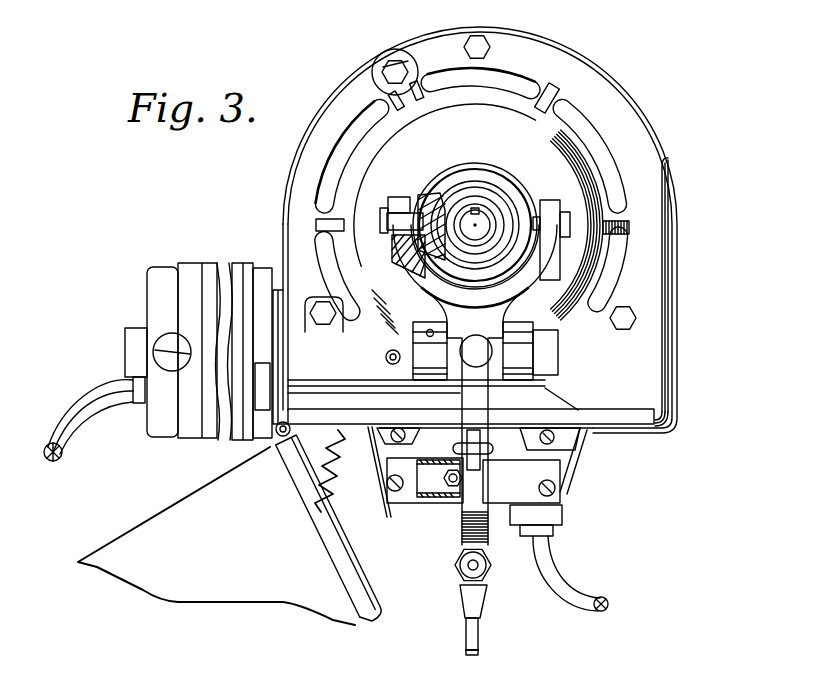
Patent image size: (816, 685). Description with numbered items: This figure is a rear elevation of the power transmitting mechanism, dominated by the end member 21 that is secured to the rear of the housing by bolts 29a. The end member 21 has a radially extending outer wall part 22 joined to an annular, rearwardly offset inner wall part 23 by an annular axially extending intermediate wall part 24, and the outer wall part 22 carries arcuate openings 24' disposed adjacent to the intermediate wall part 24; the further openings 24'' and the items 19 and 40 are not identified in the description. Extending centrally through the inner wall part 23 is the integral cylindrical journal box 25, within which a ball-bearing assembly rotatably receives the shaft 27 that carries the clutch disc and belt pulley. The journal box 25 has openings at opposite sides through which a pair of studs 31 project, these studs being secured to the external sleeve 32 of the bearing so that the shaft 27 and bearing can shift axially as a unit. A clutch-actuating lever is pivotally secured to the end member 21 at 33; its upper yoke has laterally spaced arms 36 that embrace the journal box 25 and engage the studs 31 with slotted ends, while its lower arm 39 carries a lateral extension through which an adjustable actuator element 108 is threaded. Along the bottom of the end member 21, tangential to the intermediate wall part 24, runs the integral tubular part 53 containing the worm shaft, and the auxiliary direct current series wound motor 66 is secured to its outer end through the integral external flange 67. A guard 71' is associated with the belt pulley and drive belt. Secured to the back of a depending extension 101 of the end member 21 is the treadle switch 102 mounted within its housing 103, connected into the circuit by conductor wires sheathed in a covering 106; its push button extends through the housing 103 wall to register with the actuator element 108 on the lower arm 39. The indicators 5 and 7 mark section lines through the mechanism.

The brush holder 19 is at (386, 62).
The end member 21 is at (667, 140).
The outer wall part 22 is at (652, 207).
The inner wall part 23 is at (460, 117).
The intermediate wall part 24 is at (487, 239).
The arcuate openings 24' is at (471, 137).
The arcuate slot 24'' is at (475, 273).
The journal box 25 is at (432, 198).
The shaft 27 is at (480, 215).
The bolts 29a is at (484, 40).
The studs 31 is at (383, 210).
The external sleeve of the ball-bearing assembly 32 is at (440, 192).
The pivot 33 is at (417, 350).
The arms 36 is at (427, 297).
The lower arm 39 is at (480, 493).
The rod 40 is at (483, 637).
The tubular part 53 is at (471, 386).
The auxiliary direct current series wound motor 66 is at (163, 268).
The external flange 67 is at (284, 354).
The guard 71' is at (229, 523).
The depending extension 101 is at (573, 448).
The treadle switch 102 is at (433, 487).
The housing 103 is at (403, 493).
The covering 106 is at (557, 582).
The adjustable actuator element 108 is at (455, 490).
The section line 5 is at (365, 223).
The section line 7 is at (358, 477).